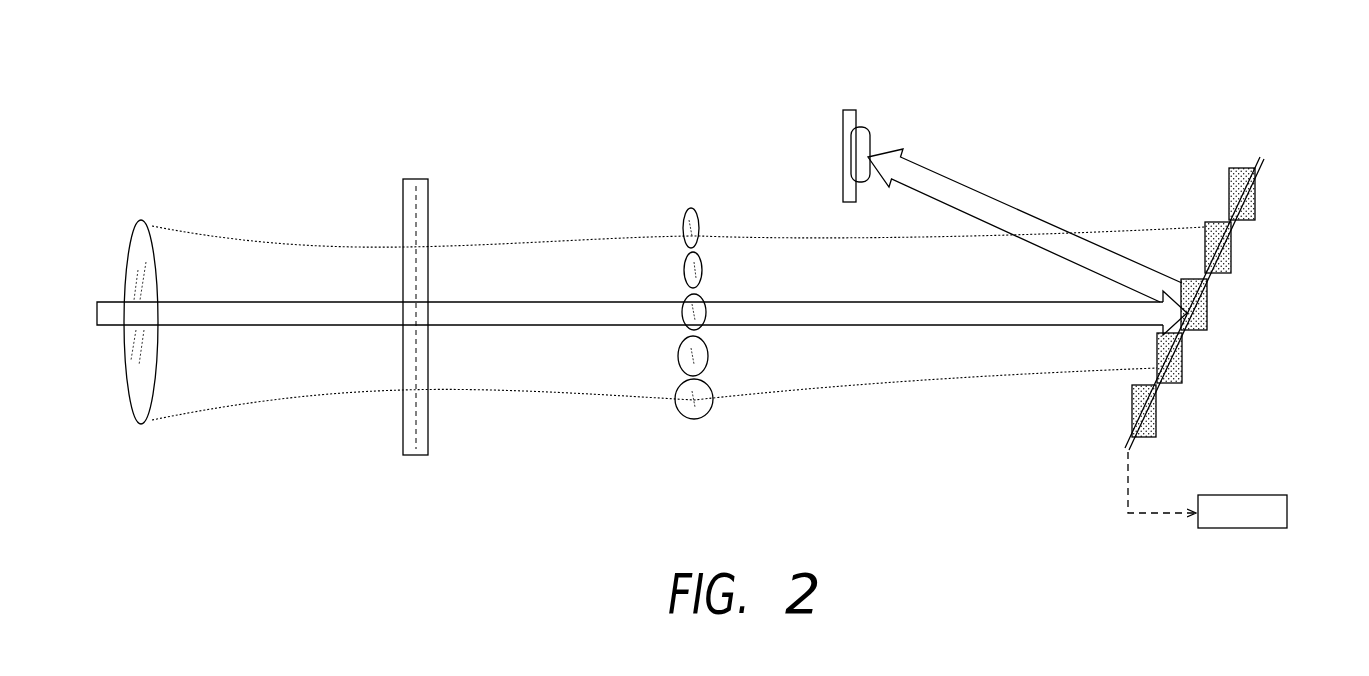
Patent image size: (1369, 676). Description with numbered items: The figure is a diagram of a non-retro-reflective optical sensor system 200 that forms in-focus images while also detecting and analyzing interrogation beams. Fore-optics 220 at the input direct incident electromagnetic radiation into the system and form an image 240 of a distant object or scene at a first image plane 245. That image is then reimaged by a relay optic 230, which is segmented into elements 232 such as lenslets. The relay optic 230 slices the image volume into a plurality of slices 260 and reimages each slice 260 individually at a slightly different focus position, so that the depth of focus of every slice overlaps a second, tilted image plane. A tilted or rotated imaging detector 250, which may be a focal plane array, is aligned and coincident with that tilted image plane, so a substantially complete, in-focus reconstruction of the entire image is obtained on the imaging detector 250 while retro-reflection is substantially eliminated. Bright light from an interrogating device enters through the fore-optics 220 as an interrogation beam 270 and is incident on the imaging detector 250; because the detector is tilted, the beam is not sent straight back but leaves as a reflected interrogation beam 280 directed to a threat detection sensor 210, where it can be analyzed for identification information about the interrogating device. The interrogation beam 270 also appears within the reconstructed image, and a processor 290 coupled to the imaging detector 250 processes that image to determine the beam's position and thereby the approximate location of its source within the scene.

The non-retro-reflective optical sensor system 200 is at (724, 108).
The threat detection sensor 210 is at (857, 112).
The fore-optics 220 is at (148, 222).
The relay optic 230 is at (652, 336).
The elements 232 is at (686, 256).
The image 240 is at (472, 434).
The first image plane 245 is at (418, 192).
The imaging detector 250 is at (1262, 155).
The slices 260 is at (1116, 398).
The interrogation beam 270 is at (1022, 325).
The reflected interrogation beam 280 is at (980, 190).
The processor 290 is at (1210, 495).